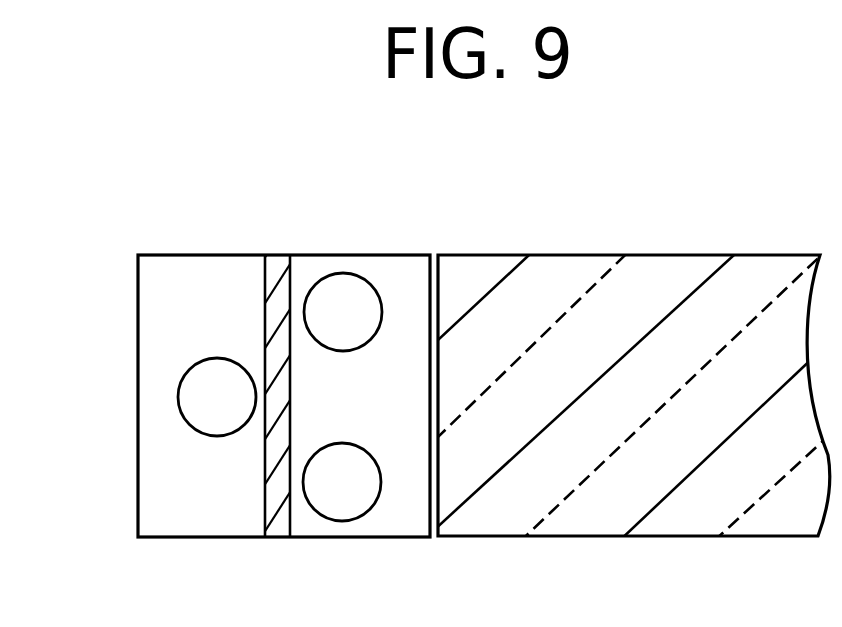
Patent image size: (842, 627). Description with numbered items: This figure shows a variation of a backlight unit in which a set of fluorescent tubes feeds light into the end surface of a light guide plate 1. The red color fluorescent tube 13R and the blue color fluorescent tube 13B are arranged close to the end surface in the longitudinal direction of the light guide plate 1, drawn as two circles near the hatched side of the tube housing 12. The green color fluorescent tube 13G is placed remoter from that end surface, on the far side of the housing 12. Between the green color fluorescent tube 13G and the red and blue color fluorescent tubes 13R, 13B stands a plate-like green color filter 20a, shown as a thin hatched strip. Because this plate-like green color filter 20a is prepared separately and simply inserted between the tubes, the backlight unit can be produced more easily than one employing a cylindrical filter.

The light guide plate 1 is at (722, 265).
The color filter layer 12 is at (183, 538).
The green color fluorescent tube 13G is at (197, 378).
The blue color fluorescent tube 13B is at (366, 277).
The red color fluorescent tube 13R is at (345, 515).
The plate-like green color filter 20a is at (277, 268).